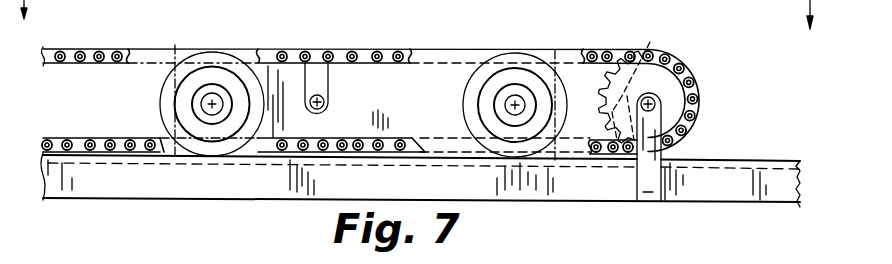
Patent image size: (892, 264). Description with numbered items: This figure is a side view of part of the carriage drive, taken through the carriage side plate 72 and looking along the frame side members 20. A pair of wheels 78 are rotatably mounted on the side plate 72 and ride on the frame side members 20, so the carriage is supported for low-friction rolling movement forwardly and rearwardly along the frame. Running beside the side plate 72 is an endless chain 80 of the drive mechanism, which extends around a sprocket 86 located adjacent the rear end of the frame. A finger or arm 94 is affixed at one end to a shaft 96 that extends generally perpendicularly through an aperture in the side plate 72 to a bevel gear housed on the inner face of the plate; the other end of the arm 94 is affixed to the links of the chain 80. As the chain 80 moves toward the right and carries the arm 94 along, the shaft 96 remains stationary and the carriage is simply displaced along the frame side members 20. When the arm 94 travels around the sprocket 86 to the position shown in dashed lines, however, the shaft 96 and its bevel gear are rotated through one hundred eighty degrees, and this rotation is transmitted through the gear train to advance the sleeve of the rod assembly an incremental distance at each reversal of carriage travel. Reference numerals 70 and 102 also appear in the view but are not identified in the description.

The frame side member 20 is at (586, 188).
The conveyor assembly direction 70 is at (456, 94).
The side plate 72 is at (441, 135).
The wheel 78 is at (242, 70).
The chain 80 is at (133, 10).
The sprocket 86 is at (668, 83).
The finger 94 is at (325, 80).
The shaft 96 is at (329, 108).
The bracket 102 is at (661, 108).